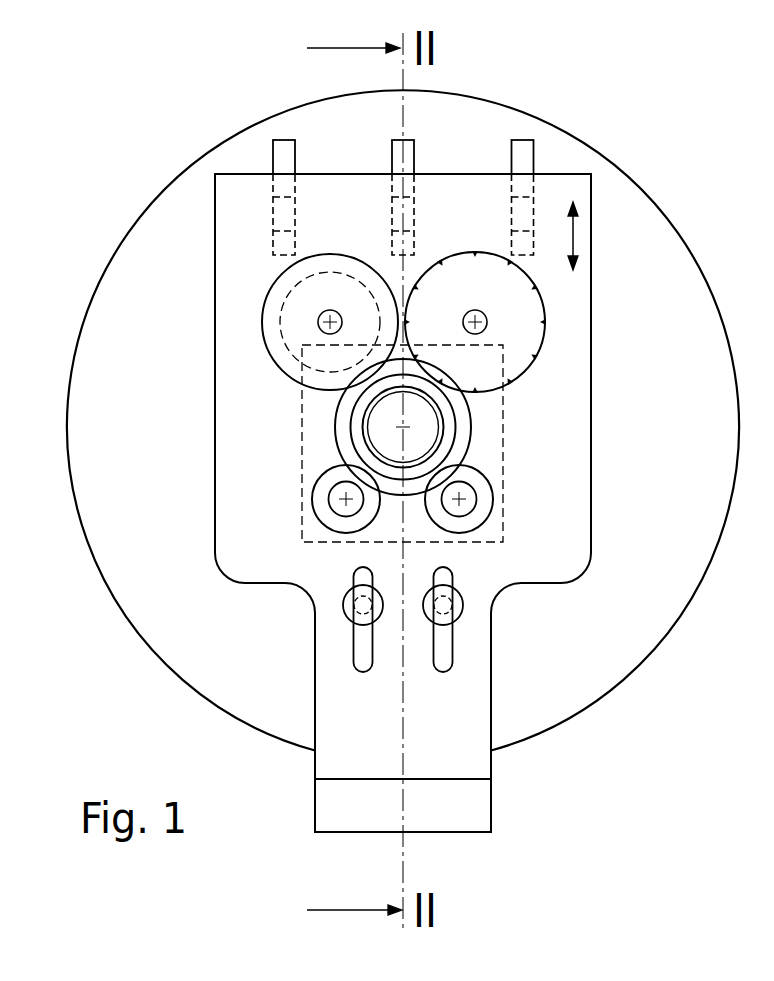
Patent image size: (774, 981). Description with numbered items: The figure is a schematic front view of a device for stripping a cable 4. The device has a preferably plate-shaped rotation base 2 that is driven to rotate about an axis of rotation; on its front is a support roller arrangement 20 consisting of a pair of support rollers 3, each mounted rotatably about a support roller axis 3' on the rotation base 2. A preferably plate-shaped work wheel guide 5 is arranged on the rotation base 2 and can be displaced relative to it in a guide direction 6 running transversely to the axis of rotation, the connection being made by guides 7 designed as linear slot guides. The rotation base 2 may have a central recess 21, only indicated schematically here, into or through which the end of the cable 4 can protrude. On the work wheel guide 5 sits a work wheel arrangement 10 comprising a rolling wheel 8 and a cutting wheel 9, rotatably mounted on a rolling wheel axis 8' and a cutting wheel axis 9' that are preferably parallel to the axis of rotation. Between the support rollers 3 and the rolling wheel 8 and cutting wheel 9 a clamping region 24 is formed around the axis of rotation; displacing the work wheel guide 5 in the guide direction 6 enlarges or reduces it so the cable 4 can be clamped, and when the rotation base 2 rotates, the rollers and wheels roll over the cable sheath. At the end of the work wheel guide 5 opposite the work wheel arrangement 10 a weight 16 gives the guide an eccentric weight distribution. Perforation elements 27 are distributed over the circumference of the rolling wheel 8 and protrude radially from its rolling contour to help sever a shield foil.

The rotation base 2 is at (612, 197).
The support roller 3 is at (390, 589).
The support roller axis 3' is at (548, 616).
The cable 4 is at (383, 422).
The work wheel guide 5 is at (563, 535).
The guide direction 6 is at (578, 235).
The guide 7 is at (287, 217).
The rolling wheel 8 is at (576, 320).
The rolling wheel axis 8' is at (601, 271).
The cutting wheel 9 is at (203, 322).
The cutting wheel axis 9' is at (184, 364).
The work wheel arrangement 10 is at (248, 287).
The weight 16 is at (447, 802).
The support roller arrangement 20 is at (290, 487).
The central recess 21 is at (474, 427).
The clamping region 24 is at (494, 452).
The perforation elements 27 is at (441, 255).